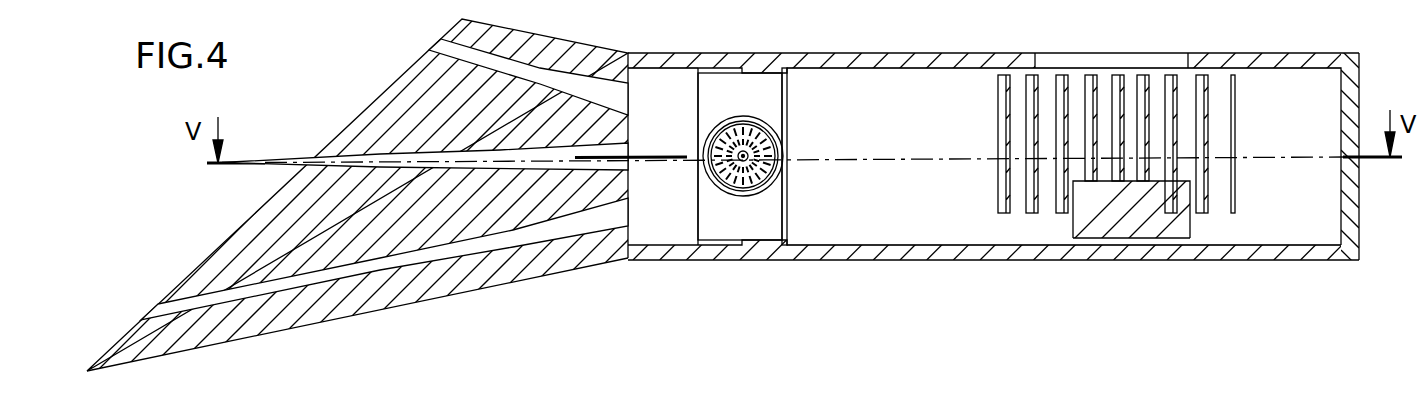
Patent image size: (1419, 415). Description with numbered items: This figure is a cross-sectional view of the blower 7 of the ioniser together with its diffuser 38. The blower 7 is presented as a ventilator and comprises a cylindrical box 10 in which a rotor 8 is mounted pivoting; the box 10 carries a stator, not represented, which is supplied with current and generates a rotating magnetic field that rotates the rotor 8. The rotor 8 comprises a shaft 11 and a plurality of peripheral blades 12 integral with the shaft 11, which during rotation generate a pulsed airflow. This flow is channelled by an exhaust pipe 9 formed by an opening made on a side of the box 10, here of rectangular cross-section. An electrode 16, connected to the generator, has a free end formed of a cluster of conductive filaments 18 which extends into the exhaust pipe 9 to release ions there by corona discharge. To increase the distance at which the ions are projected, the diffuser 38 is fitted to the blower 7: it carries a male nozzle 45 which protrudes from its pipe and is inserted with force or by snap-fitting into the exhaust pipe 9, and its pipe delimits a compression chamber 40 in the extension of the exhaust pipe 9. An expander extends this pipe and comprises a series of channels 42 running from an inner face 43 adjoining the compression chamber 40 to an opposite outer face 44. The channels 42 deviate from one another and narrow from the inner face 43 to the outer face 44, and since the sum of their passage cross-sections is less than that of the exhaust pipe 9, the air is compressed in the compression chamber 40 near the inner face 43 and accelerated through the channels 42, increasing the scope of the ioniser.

The blower 7 is at (1288, 50).
The rotor 8 is at (1083, 242).
The exhaust pipe 9 is at (890, 90).
The box 10 is at (1253, 253).
The shaft 11 is at (1120, 230).
The peripheral blades 12 is at (1030, 98).
The electrode 16 is at (762, 147).
The filaments 18 is at (750, 137).
The diffuser 38 is at (527, 281).
The compression chamber 40 is at (660, 72).
The channels 42 is at (517, 67).
The inner face 43 is at (654, 155).
The outer face 44 is at (370, 104).
The male nozzle 45 is at (767, 72).